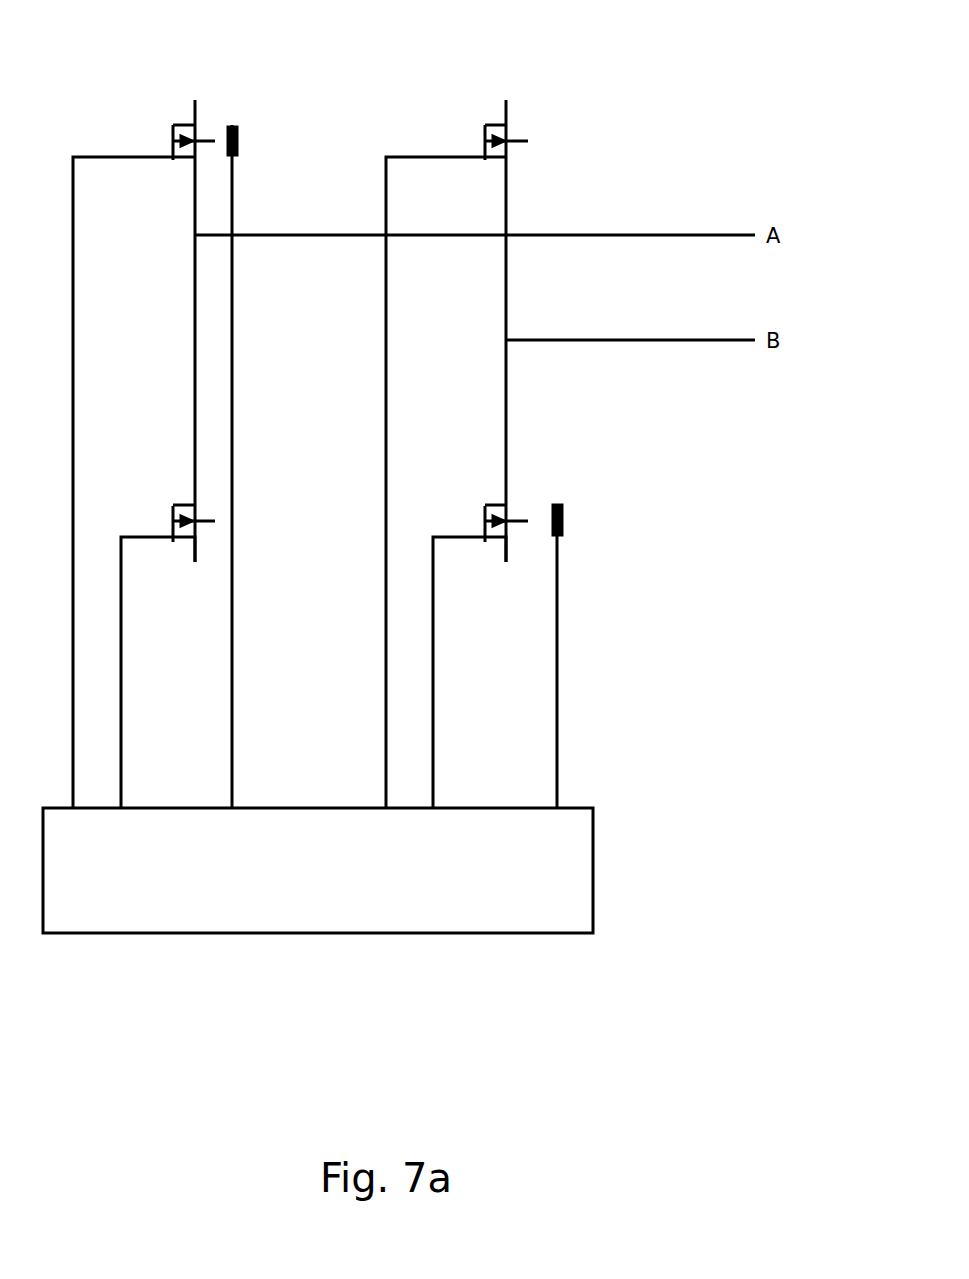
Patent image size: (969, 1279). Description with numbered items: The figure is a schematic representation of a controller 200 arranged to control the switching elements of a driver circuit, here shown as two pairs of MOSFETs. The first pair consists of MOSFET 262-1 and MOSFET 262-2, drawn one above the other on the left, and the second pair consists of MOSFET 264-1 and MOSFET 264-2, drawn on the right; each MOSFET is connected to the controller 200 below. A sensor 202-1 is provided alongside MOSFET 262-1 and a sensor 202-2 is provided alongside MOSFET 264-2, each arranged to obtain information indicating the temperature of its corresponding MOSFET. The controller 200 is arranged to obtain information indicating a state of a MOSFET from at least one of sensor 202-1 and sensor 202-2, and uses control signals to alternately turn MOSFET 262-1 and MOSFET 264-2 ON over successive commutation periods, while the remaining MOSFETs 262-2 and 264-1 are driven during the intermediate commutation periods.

The controller 200 is at (593, 833).
The sensor 202-1 is at (233, 125).
The sensor 202-2 is at (558, 505).
The MOSFET 262-1 is at (172, 113).
The MOSFET 262-2 is at (174, 491).
The MOSFET 264-1 is at (485, 114).
The MOSFET 264-2 is at (480, 489).